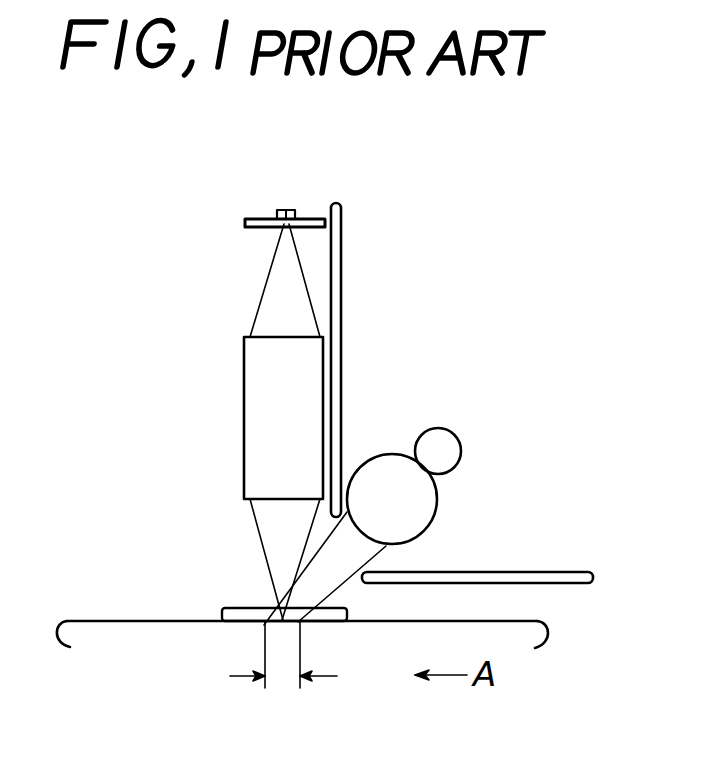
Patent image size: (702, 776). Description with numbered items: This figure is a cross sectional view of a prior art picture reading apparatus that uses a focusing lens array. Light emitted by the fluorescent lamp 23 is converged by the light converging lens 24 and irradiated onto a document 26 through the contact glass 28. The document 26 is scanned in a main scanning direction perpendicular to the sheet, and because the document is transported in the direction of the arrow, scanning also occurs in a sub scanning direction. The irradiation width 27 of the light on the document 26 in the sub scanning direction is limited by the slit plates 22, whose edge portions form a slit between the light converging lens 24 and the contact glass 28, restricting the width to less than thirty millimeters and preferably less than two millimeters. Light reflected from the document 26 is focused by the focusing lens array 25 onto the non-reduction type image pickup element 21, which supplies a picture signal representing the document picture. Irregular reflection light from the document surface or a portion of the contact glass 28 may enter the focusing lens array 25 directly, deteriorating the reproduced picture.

The non-reduction type image pickup element 21 is at (289, 205).
The slit plates 22 is at (343, 232).
The fluorescent lamp 23 is at (440, 427).
The light converging lens 24 is at (437, 511).
The focusing lens array 25 is at (258, 393).
The document 26 is at (108, 620).
The irradiation width 27 is at (282, 683).
The contact glass 28 is at (225, 607).